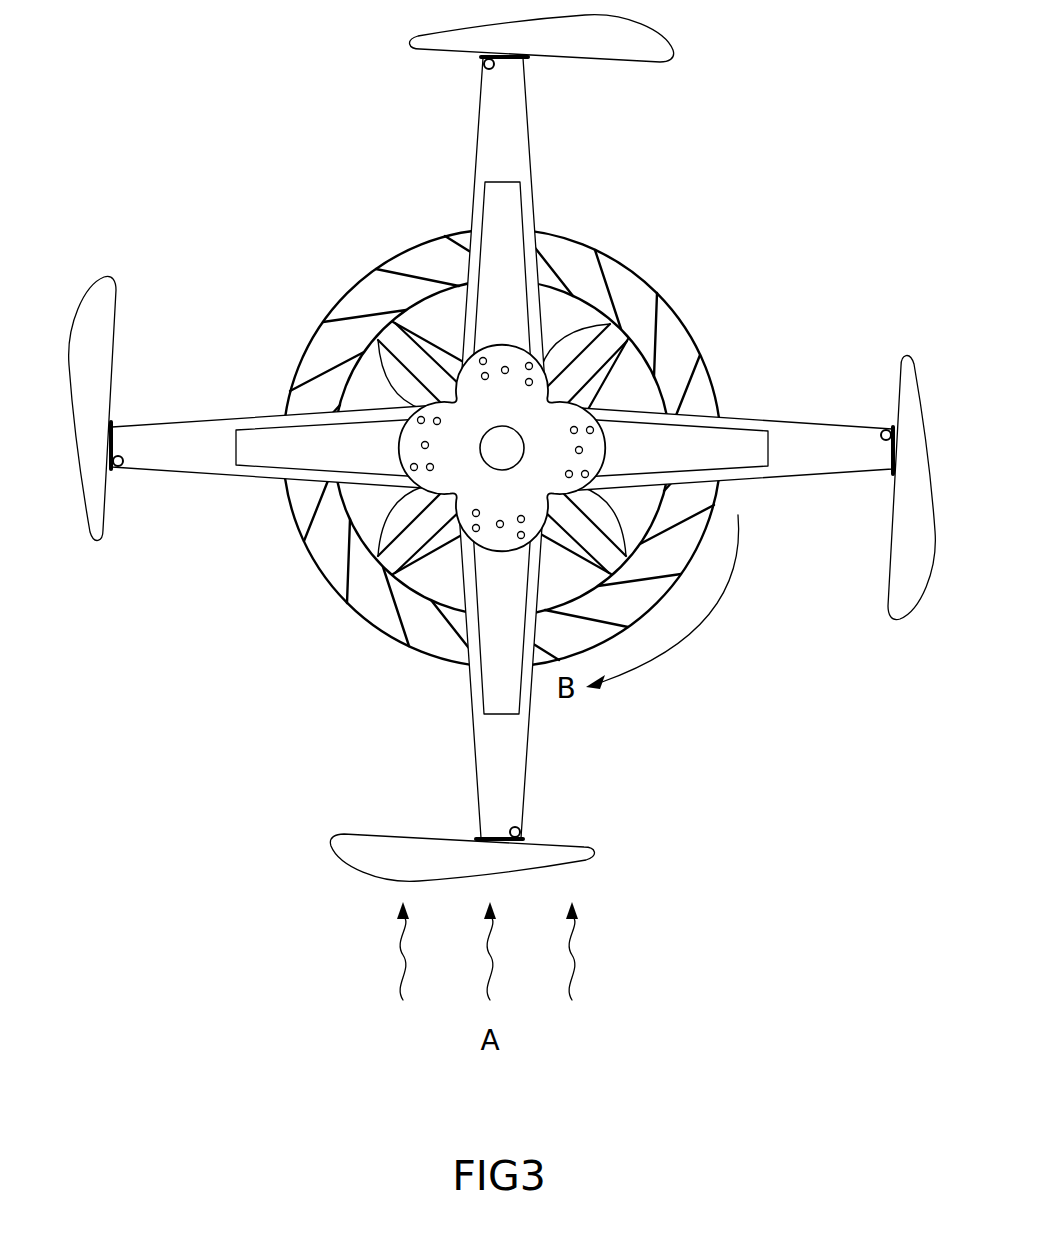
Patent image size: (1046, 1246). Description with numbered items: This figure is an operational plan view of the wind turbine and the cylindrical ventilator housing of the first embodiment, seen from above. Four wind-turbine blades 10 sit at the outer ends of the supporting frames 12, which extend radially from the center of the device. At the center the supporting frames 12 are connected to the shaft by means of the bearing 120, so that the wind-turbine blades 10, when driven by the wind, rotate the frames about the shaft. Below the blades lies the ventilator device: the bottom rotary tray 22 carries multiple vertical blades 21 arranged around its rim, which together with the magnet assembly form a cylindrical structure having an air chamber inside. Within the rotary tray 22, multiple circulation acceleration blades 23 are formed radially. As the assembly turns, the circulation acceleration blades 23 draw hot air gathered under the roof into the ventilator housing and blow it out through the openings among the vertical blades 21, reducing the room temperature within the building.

The wind-turbine blades 10 is at (570, 40).
The supporting frames 12 is at (497, 117).
The vertical blades 21 is at (388, 282).
The rotary tray 22 is at (391, 640).
The circulation acceleration blades 23 is at (584, 394).
The bearing 120 is at (500, 446).